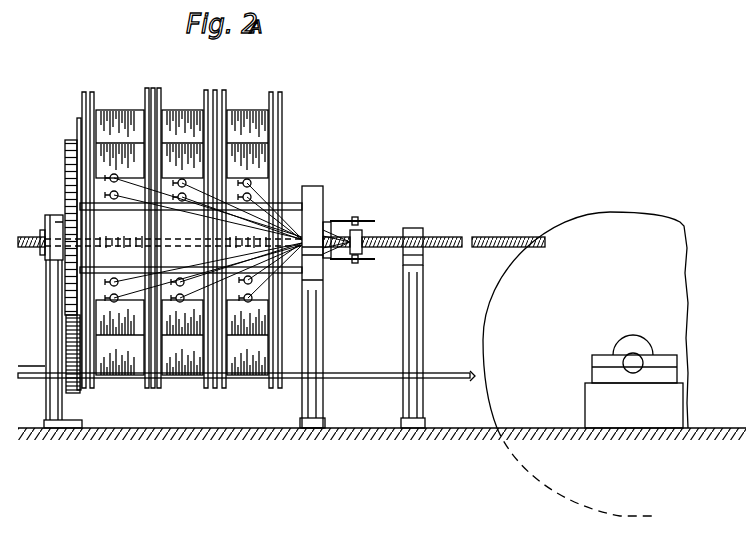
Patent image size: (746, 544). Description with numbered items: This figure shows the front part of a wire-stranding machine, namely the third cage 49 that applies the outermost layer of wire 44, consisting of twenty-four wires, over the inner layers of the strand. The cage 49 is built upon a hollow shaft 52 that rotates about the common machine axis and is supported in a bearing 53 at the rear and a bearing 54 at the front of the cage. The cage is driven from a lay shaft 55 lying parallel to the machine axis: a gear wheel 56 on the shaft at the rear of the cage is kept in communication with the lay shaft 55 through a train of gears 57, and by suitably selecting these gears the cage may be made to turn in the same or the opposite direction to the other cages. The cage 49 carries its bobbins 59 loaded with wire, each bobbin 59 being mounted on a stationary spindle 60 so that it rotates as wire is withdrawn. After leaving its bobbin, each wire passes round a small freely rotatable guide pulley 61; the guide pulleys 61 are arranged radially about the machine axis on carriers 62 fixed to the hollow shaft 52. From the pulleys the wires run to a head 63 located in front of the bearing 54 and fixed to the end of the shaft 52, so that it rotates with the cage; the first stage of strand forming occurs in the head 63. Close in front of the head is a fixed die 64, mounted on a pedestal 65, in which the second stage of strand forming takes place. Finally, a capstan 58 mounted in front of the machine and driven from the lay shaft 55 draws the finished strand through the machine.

The third layer of wire 44 is at (390, 237).
The third cage 49 is at (82, 100).
The hollow shaft 52 is at (43, 223).
The rear bearing 53 is at (58, 222).
The front bearing 54 is at (310, 204).
The lay shaft 55 is at (352, 378).
The gear wheel 56 is at (65, 148).
The train of gears 57 is at (76, 383).
The capstan 58 is at (662, 225).
The bobbins 59 is at (283, 123).
The stationary spindle 60 is at (284, 112).
The guide pulley 61 is at (108, 298).
The carrier 62 is at (80, 270).
The head 63 is at (347, 213).
The die 64 is at (414, 228).
The pedestal 65 is at (413, 397).